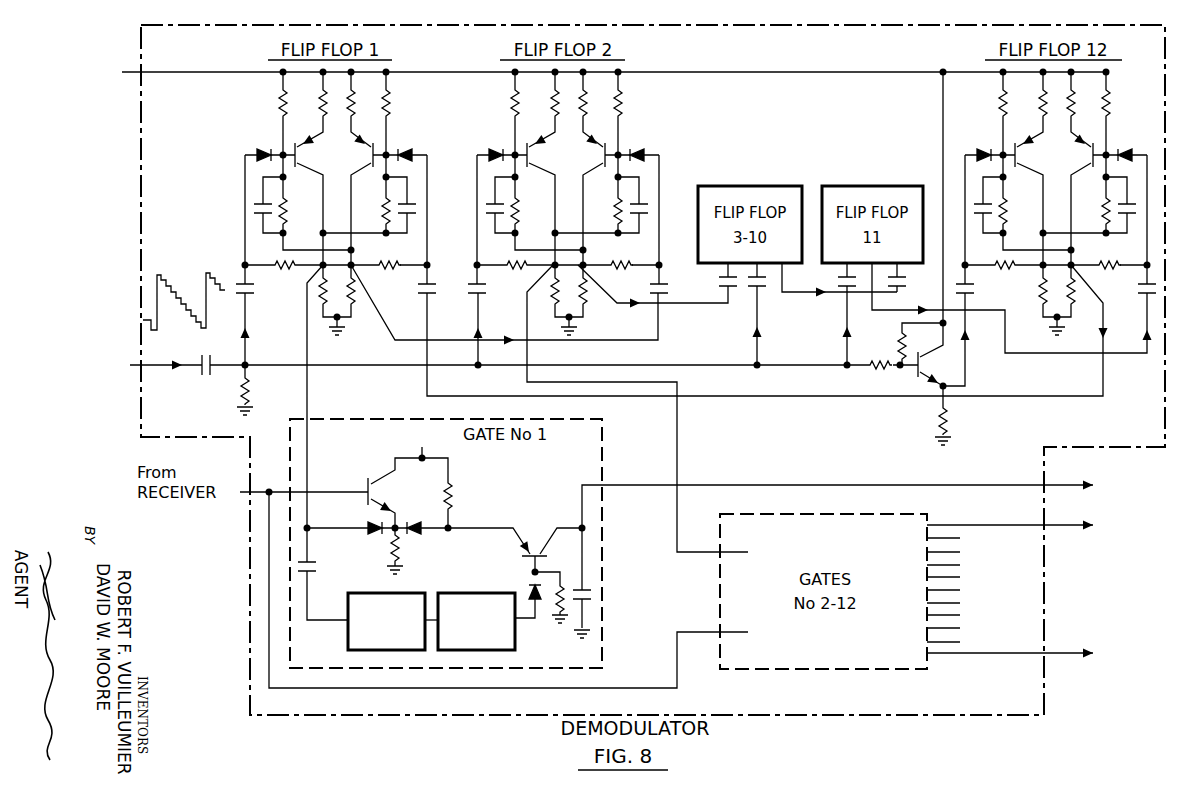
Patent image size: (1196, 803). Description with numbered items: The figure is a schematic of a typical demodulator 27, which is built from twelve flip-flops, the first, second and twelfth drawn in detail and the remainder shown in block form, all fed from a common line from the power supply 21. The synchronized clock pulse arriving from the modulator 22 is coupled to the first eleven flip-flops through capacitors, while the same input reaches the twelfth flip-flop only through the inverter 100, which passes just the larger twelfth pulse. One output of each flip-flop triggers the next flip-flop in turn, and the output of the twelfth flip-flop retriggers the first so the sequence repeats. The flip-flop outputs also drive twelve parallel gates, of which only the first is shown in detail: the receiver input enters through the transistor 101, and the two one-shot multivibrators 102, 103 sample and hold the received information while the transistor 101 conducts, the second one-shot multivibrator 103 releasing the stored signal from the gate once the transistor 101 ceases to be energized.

The power supply 21 is at (576, 83).
The modulator 22 is at (440, 336).
The demodulator 27 is at (163, 158).
The inverter 100 is at (868, 373).
The transistor 101 is at (393, 492).
The one-shot multivibrator 102 is at (393, 598).
The second one-shot multivibrator 103 is at (463, 598).